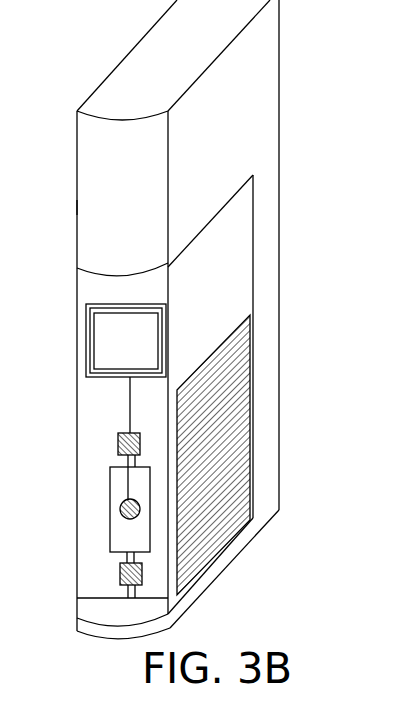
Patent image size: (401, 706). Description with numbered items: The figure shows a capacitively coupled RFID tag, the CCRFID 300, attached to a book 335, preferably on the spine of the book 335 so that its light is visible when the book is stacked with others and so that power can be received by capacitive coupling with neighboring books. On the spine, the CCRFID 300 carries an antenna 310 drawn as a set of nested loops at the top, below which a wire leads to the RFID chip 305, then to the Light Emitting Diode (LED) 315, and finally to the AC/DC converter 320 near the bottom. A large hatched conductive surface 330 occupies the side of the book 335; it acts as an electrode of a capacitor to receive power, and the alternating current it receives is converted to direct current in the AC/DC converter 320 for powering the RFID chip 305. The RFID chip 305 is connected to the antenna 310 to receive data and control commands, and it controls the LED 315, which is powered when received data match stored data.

The CCRFID 300 is at (213, 247).
The RFID chip 305 is at (118, 440).
The antenna 310 is at (86, 333).
The Light Emitting Diode (LED) 315 is at (110, 507).
The AC/DC converter 320 is at (120, 571).
The conductive surface 330 is at (207, 352).
The book 335 is at (77, 205).